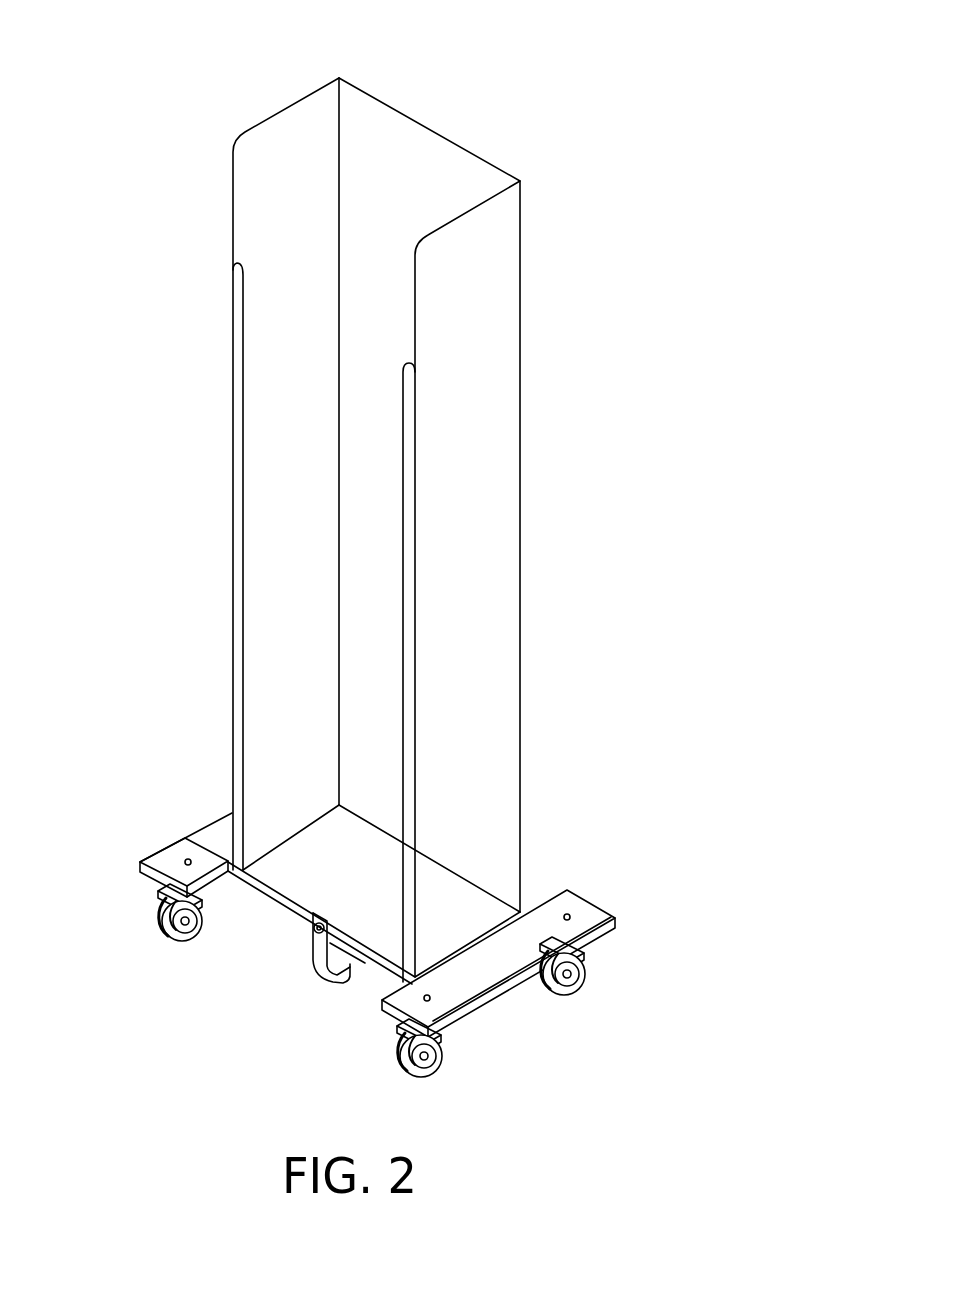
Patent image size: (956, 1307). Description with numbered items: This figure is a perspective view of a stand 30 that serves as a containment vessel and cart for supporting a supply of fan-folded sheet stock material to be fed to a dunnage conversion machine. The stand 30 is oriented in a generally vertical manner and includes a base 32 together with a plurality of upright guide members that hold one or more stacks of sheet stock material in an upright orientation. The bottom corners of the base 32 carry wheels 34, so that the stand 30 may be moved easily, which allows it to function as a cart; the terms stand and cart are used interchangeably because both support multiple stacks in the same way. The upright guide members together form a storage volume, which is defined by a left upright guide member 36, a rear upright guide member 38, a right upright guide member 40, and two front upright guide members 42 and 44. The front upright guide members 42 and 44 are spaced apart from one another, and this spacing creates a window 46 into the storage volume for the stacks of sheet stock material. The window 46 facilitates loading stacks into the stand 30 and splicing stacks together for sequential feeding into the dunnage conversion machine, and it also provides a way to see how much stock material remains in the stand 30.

The stand 30 is at (372, 494).
The base 32 is at (300, 878).
The wheels 34 is at (165, 935).
The left upright guide member 36 is at (252, 194).
The rear upright guide member 38 is at (437, 175).
The right upright guide member 40 is at (480, 295).
The front upright guide member 42 is at (238, 352).
The front upright guide member 44 is at (407, 494).
The window 46 is at (267, 451).